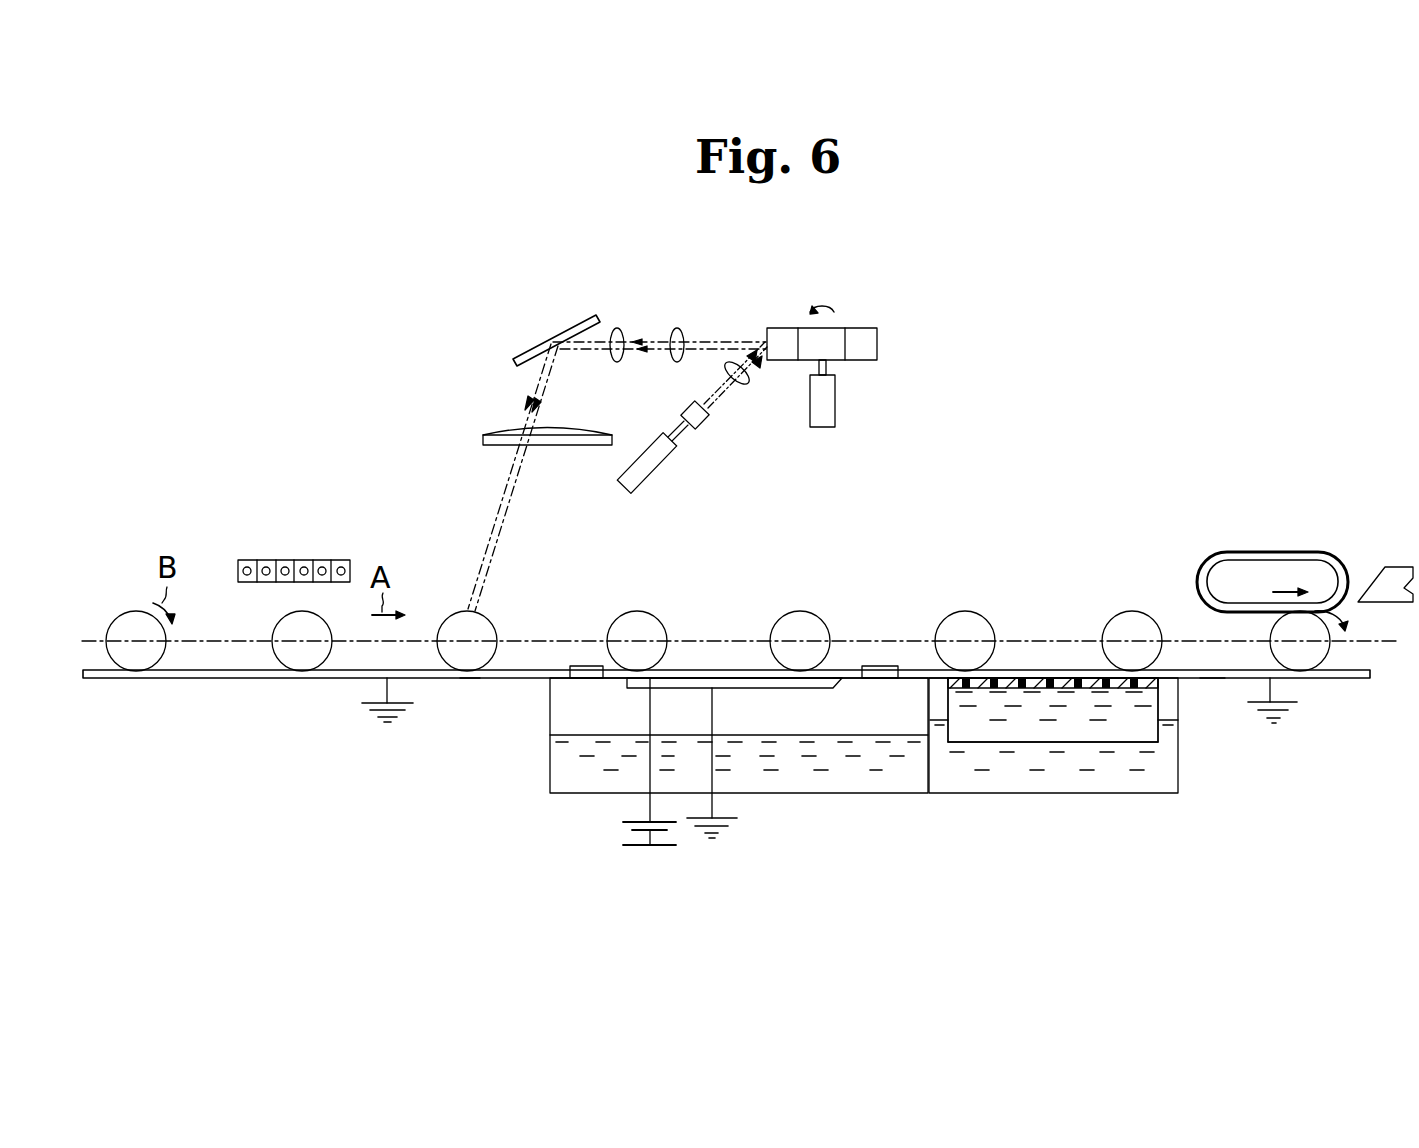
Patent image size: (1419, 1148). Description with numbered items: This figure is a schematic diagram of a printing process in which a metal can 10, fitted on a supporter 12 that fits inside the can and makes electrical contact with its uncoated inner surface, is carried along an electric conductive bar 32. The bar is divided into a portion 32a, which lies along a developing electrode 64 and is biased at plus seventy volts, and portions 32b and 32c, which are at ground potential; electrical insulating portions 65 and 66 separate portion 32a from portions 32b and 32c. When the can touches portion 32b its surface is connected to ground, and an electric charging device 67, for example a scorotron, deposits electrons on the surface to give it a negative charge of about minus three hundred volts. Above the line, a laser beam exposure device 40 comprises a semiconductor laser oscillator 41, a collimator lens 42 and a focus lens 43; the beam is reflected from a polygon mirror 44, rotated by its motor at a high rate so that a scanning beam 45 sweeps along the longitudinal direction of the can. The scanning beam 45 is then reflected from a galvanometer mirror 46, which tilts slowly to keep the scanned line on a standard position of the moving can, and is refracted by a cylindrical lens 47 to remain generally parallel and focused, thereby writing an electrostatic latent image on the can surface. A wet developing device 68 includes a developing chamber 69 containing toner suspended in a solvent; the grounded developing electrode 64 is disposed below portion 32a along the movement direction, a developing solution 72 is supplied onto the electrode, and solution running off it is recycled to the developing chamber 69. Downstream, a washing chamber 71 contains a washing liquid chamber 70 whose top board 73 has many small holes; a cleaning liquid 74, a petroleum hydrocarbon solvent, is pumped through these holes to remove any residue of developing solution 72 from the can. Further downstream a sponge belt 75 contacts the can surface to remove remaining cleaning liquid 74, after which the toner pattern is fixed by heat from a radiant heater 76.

The metal can 10 is at (122, 612).
The supporter 12 is at (140, 625).
The electric conductive bar 32 is at (522, 685).
The portion of electric conductive bar 32a is at (842, 678).
The portion of electric conductive bar 32b is at (470, 679).
The portion of electric conductive bar 32c is at (1212, 678).
The laser beam exposure device 40 is at (730, 314).
The semiconductor laser oscillator 41 is at (645, 447).
The collimator lens 42 is at (707, 418).
The focus lens 43 is at (747, 385).
The polygon mirror 44 is at (878, 340).
The scanning beam 45 is at (473, 611).
The galvanometer mirror 46 is at (595, 312).
The cylindrical lens 47 is at (487, 438).
The developing electrode 64 is at (788, 688).
The electrical insulating portion 65 is at (587, 666).
The electrical insulating portion 66 is at (880, 666).
The electric charging device 67 is at (300, 560).
The wet developing device 68 is at (536, 776).
The developing chamber 69 is at (760, 793).
The washing liquid chamber 70 is at (1053, 742).
The washing chamber 71 is at (1122, 793).
The developing solution 72 is at (870, 757).
The top board 73 is at (1013, 688).
The cleaning liquid 74 is at (1137, 725).
The sponge belt 75 is at (1257, 552).
The radiant heater 76 is at (1393, 567).